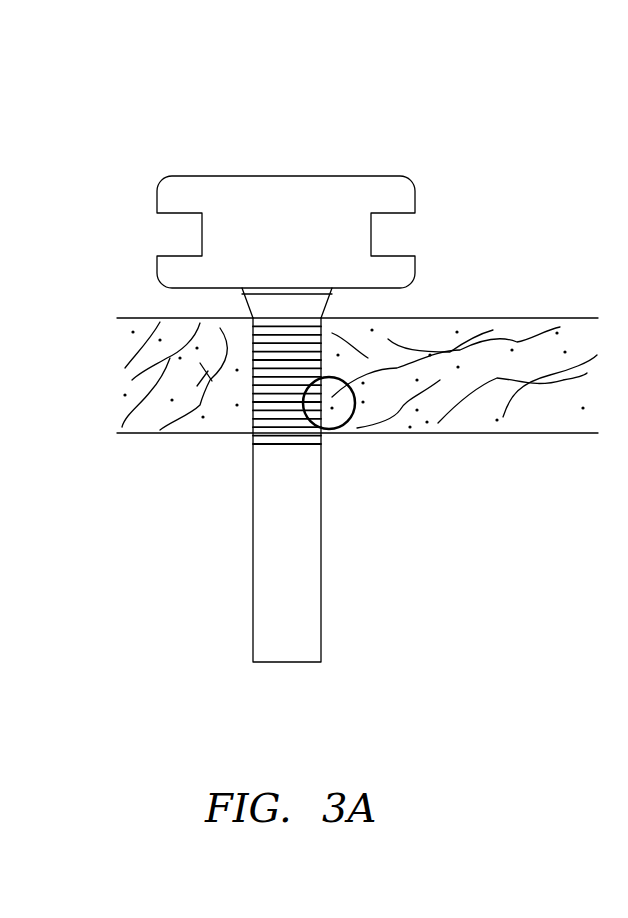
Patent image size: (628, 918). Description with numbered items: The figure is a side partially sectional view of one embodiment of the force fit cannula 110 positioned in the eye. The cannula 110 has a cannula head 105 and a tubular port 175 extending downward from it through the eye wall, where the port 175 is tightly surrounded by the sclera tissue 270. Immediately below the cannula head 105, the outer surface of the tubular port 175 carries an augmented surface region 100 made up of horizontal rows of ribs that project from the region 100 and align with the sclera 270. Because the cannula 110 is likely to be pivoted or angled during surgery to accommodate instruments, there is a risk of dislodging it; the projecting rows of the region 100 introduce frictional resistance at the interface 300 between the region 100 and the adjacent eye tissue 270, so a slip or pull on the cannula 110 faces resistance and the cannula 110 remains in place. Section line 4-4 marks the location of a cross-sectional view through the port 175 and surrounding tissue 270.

The cannula 110 is at (355, 92).
The cannula head 105 is at (307, 220).
The augmented surface region 100 is at (330, 472).
The tubular port 175 is at (307, 600).
The interface 300 is at (253, 443).
The sclera 270 is at (580, 424).
The section line 4-4 is at (343, 430).